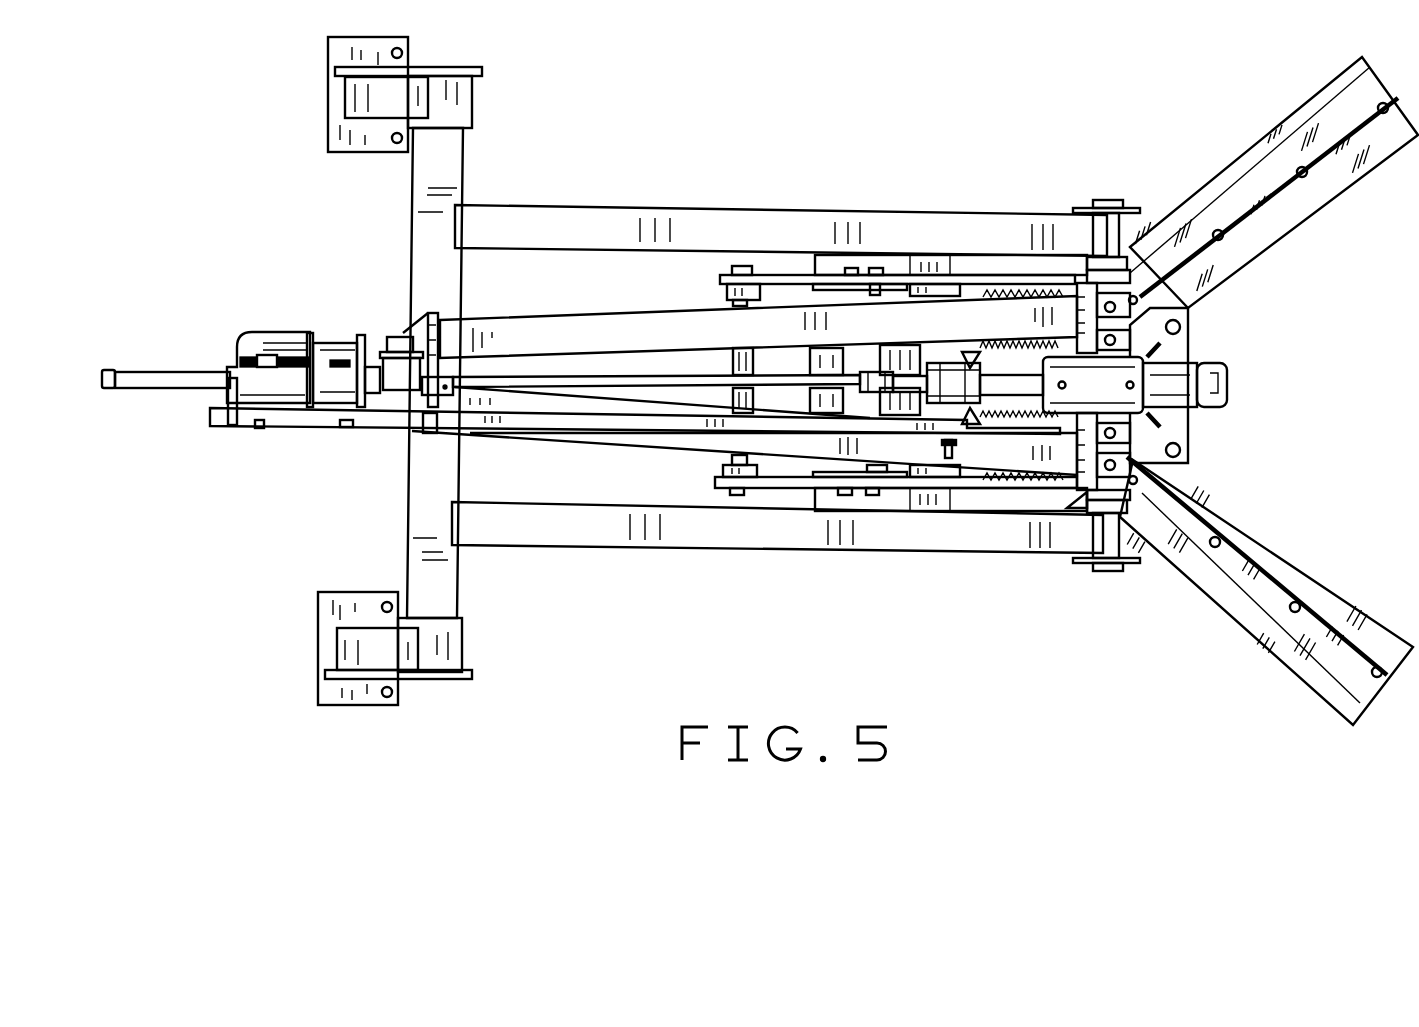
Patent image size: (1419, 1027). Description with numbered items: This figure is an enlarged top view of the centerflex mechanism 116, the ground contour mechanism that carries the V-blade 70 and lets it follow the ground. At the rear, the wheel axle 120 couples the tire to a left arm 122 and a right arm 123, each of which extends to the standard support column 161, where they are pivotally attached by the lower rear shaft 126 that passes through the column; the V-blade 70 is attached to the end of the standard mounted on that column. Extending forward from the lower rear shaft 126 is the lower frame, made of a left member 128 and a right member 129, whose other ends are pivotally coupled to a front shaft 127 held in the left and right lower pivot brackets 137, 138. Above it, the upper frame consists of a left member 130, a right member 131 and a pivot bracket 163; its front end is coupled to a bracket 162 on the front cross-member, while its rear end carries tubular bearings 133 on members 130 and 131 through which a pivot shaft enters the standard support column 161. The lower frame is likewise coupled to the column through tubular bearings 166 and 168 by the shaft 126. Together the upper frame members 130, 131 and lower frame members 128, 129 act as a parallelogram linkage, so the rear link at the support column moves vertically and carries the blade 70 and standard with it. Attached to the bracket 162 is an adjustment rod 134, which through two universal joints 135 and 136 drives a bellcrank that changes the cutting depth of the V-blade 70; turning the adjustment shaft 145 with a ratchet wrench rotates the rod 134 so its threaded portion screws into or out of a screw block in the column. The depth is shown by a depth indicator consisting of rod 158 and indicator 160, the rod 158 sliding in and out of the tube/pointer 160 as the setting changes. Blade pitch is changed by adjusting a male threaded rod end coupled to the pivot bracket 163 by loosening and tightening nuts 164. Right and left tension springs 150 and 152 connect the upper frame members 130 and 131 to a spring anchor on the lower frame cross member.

The V-blade 70 is at (1257, 170).
The centerflex mechanism 116 is at (915, 138).
The wheel axle 120 is at (728, 460).
The left arm 122 is at (778, 276).
The right arm 123 is at (780, 478).
The lower rear shaft 126 is at (1103, 563).
The front shaft 127 is at (422, 510).
The left member 128 is at (604, 222).
The right member 129 is at (865, 537).
The left member 130 is at (578, 333).
The right member 131 is at (618, 435).
The tubular bearings 133 is at (1076, 288).
The adjustment rod 134 is at (553, 385).
The universal joint 135 is at (430, 404).
The universal joint 136 is at (868, 372).
The left lower pivot bracket 137 is at (440, 98).
The right lower pivot bracket 138 is at (425, 653).
The adjustment shaft 145 is at (137, 370).
The tension spring 150 is at (1000, 290).
The tension spring 152 is at (995, 480).
The rod 158 is at (345, 428).
The depth indicator tube/pointer 160 is at (233, 425).
The standard support column 161 is at (1122, 378).
The bracket 162 is at (335, 347).
The pivot bracket 163 is at (415, 330).
The nuts 164 is at (260, 353).
The tubular bearing 166 is at (1122, 233).
The tubular bearing 168 is at (1128, 556).